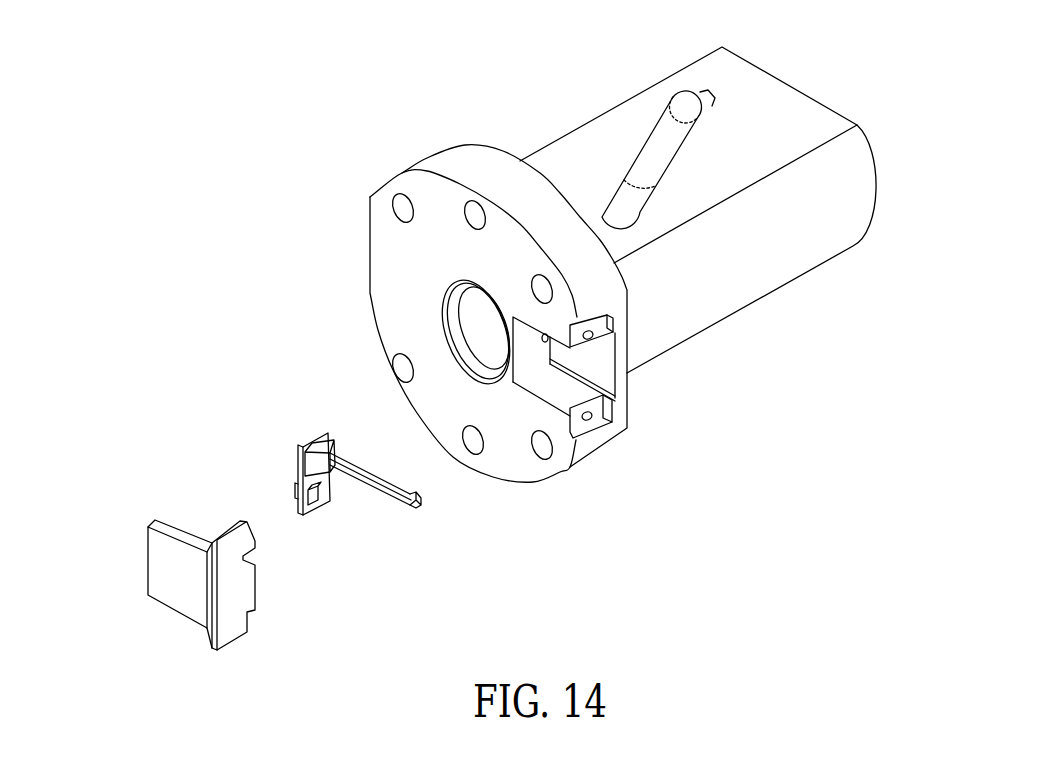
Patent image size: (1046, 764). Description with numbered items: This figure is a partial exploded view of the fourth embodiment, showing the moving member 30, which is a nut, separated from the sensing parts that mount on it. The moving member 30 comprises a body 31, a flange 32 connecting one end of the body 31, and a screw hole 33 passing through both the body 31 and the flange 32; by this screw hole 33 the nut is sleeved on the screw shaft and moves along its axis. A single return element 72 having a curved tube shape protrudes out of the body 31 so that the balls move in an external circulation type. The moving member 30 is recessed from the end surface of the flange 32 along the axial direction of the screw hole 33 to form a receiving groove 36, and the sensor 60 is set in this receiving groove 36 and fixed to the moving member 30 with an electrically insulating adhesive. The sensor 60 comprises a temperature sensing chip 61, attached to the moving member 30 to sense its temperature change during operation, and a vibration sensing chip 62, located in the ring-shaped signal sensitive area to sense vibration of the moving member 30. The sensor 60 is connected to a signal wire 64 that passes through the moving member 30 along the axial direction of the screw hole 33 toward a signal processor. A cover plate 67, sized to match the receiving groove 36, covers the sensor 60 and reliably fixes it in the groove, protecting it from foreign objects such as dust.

The moving member 30 is at (458, 67).
The body 31 is at (575, 173).
The flange 32 is at (468, 163).
The screw hole 33 is at (473, 329).
The receiving groove 36 is at (548, 383).
The sensor 60 is at (298, 410).
The temperature sensing chip 61 is at (297, 489).
The vibration sensing chip 62 is at (322, 504).
The signal wire 64 is at (390, 499).
The cover plate 67 is at (180, 603).
The return element 72 is at (663, 137).